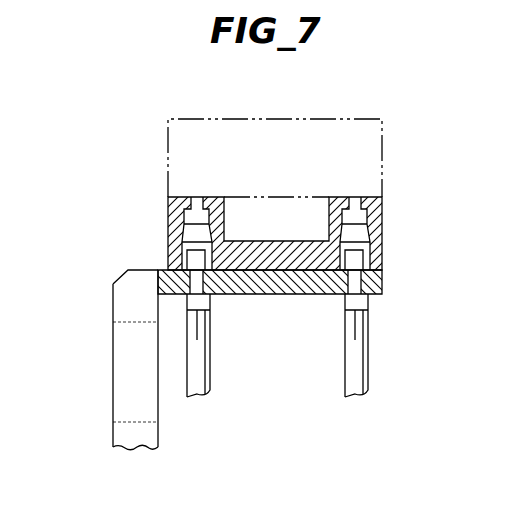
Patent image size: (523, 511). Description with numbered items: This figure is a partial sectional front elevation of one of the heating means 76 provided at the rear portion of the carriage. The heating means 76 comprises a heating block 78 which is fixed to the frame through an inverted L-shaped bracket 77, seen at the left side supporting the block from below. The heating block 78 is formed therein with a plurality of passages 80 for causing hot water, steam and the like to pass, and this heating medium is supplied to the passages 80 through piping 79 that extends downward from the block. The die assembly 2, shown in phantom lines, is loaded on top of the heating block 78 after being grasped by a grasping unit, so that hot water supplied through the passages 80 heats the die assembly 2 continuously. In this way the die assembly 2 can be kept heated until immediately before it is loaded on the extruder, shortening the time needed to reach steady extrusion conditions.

The die assembly 2 is at (307, 118).
The heating means 76 is at (384, 259).
The inverted L-shaped bracket 77 is at (148, 434).
The heating block 78 is at (380, 213).
The piping 79 is at (198, 346).
The passages 80 is at (200, 197).